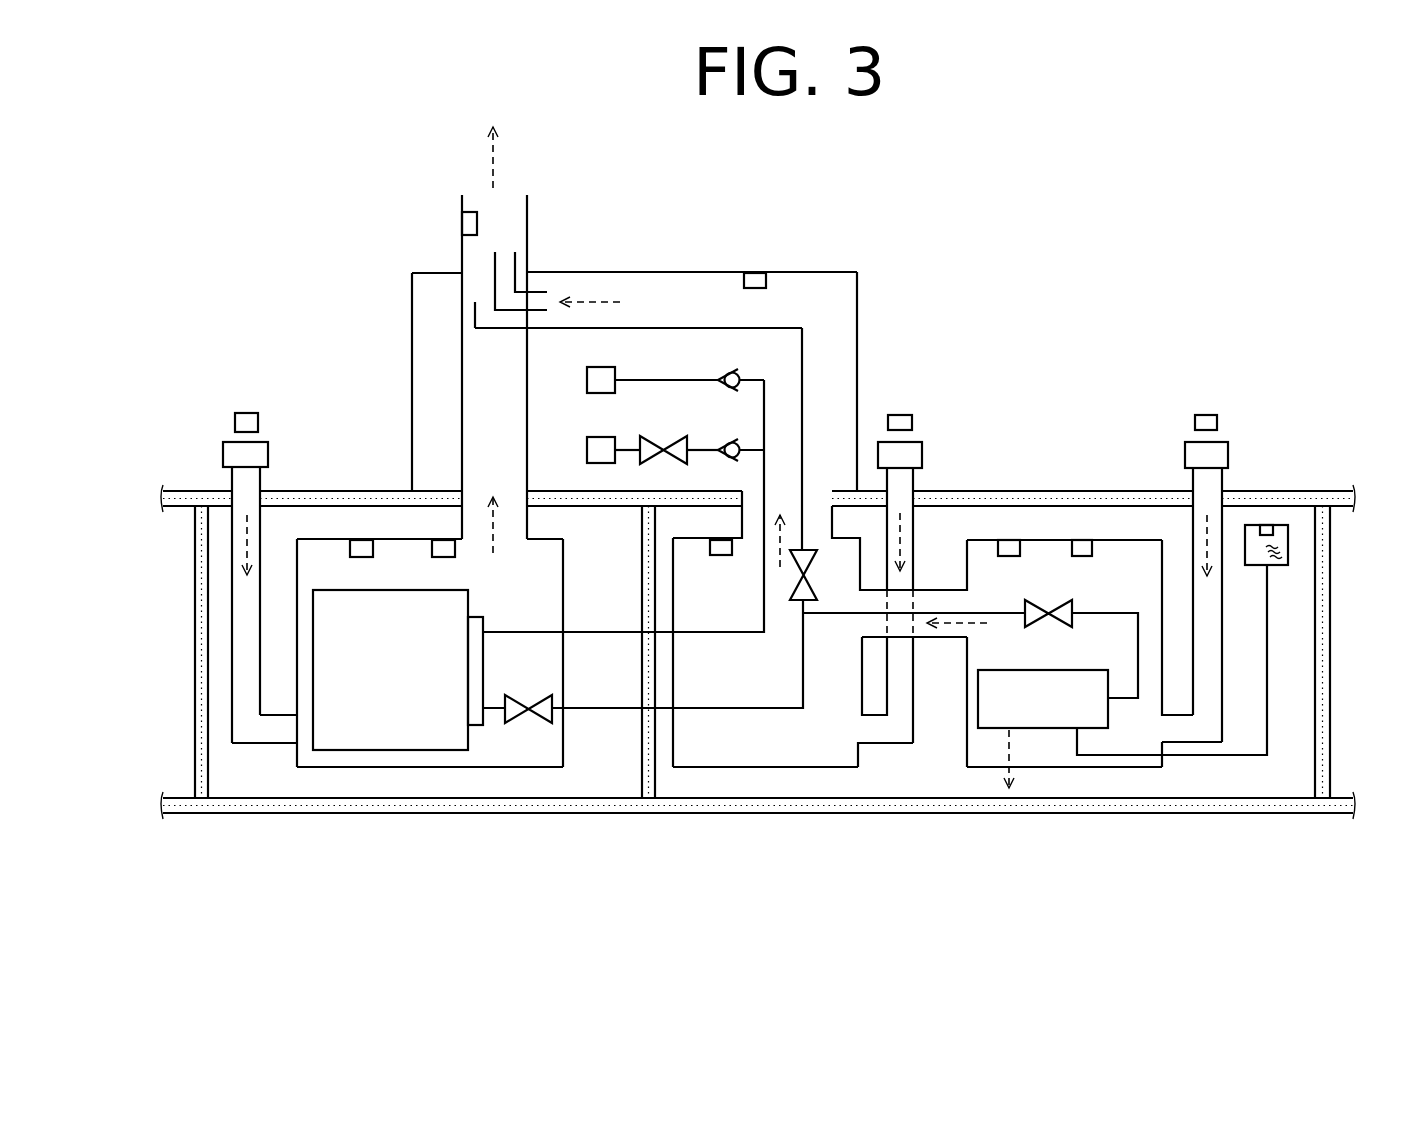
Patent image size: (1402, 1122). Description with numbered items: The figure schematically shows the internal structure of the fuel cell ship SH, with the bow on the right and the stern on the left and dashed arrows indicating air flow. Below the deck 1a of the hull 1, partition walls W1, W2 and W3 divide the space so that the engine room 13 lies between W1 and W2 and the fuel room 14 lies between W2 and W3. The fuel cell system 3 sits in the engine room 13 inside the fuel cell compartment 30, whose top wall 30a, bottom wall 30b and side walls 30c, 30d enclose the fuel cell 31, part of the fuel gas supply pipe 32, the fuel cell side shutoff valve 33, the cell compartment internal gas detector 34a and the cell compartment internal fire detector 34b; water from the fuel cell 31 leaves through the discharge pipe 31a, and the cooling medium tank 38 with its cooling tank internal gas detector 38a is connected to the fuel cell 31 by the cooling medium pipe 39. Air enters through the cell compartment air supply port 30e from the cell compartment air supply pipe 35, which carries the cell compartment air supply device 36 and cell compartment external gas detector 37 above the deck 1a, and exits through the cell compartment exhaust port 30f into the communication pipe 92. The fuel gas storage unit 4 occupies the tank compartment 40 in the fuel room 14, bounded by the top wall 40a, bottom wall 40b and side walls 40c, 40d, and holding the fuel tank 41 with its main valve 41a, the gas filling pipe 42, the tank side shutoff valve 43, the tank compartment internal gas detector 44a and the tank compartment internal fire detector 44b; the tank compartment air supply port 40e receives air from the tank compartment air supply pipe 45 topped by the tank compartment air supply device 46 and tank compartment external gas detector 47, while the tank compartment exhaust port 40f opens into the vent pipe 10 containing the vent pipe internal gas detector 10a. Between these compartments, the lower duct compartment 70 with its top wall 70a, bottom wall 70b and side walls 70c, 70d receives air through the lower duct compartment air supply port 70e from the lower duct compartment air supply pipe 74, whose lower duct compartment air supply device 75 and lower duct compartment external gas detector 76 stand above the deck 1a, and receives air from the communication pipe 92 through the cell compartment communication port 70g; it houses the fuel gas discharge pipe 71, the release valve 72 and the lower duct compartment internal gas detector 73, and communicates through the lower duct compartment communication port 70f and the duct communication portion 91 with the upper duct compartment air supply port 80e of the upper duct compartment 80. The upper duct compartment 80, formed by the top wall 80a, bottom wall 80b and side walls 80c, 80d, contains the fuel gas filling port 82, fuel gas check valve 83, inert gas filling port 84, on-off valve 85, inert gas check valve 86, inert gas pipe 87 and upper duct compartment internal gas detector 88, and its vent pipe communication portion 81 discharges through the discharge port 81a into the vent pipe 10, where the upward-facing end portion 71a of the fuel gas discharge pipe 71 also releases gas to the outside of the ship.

The hull 1 is at (1090, 437).
The deck 1a is at (1050, 490).
The fuel cell system 3 is at (1177, 777).
The fuel gas storage unit 4 is at (372, 780).
The vent pipe 10 is at (460, 335).
The vent pipe internal gas detector 10a is at (462, 225).
The engine room 13 is at (1120, 783).
The fuel room 14 is at (483, 786).
The fuel cell compartment 30 is at (1104, 607).
The top wall 30a is at (1028, 538).
The bottom wall 30b is at (1063, 767).
The side wall 30c is at (965, 755).
The side wall 30d is at (1175, 556).
The cell compartment air supply port 30e is at (1162, 728).
The cell compartment exhaust port 30f is at (967, 600).
The fuel cell 31 is at (1093, 670).
The discharge pipe 31a is at (1005, 770).
The fuel gas supply pipe 32 is at (600, 705).
The fuel cell side shutoff valve 33 is at (1050, 605).
The cell compartment internal gas detector 34a is at (1003, 557).
The cell compartment internal fire detector 34b is at (1090, 556).
The cell compartment air supply pipe 35 is at (1222, 670).
The cell compartment air supply device 36 is at (1228, 452).
The cell compartment external gas detector 37 is at (1205, 413).
The cooling medium tank 38 is at (1280, 565).
The cooling tank internal gas detector 38a is at (1268, 527).
The cooling medium pipe 39 is at (1267, 667).
The tank compartment 40 is at (454, 666).
The top wall 40a is at (392, 538).
The bottom wall 40b is at (420, 768).
The side wall 40c is at (297, 563).
The side wall 40d is at (567, 750).
The tank compartment air supply port 40e is at (295, 725).
The tank compartment exhaust port 40f is at (520, 542).
The fuel tank 41 is at (345, 752).
The main valve 41a is at (483, 662).
The gas filling pipe 42 is at (764, 475).
The tank side shutoff valve 43 is at (517, 719).
The tank compartment internal gas detector 44a is at (446, 560).
The tank compartment internal fire detector 44b is at (361, 560).
The tank compartment air supply pipe 45 is at (232, 627).
The tank compartment air supply device 46 is at (223, 454).
The tank compartment external gas detector 47 is at (250, 412).
The lower duct compartment 70 is at (801, 641).
The top wall 70a is at (657, 528).
The bottom wall 70b is at (790, 767).
The side wall 70c is at (672, 752).
The side wall 70d is at (872, 505).
The lower duct compartment air supply port 70e is at (872, 750).
The lower duct compartment communication port 70f is at (752, 540).
The cell compartment communication port 70g is at (863, 627).
The fuel gas discharge pipe 71 is at (800, 347).
The end portion 71a is at (475, 318).
The release valve 72 is at (800, 600).
The lower duct compartment internal gas detector 73 is at (718, 556).
The lower duct compartment air supply pipe 74 is at (918, 530).
The lower duct compartment air supply device 75 is at (922, 456).
The lower duct compartment external gas detector 76 is at (912, 422).
The upper duct compartment 80 is at (639, 345).
The top wall 80a is at (597, 270).
The bottom wall 80b is at (438, 488).
The side wall 80c is at (410, 388).
The side wall 80d is at (857, 280).
The upper duct compartment air supply port 80e is at (818, 482).
The vent pipe communication portion 81 is at (495, 280).
The discharge port 81a is at (502, 252).
The fuel gas filling port 82 is at (591, 369).
The fuel gas check valve 83 is at (720, 375).
The inert gas filling port 84 is at (591, 439).
The on-off valve 85 is at (665, 440).
The inert gas check valve 86 is at (727, 439).
The inert gas pipe 87 is at (629, 445).
The upper duct compartment internal gas detector 88 is at (760, 288).
The duct communication portion 91 is at (735, 515).
The communication pipe 92 is at (940, 640).
The fuel cell ship SH is at (1145, 243).
The partition wall W1 is at (1330, 690).
The partition wall W2 is at (643, 775).
The partition wall W3 is at (197, 667).